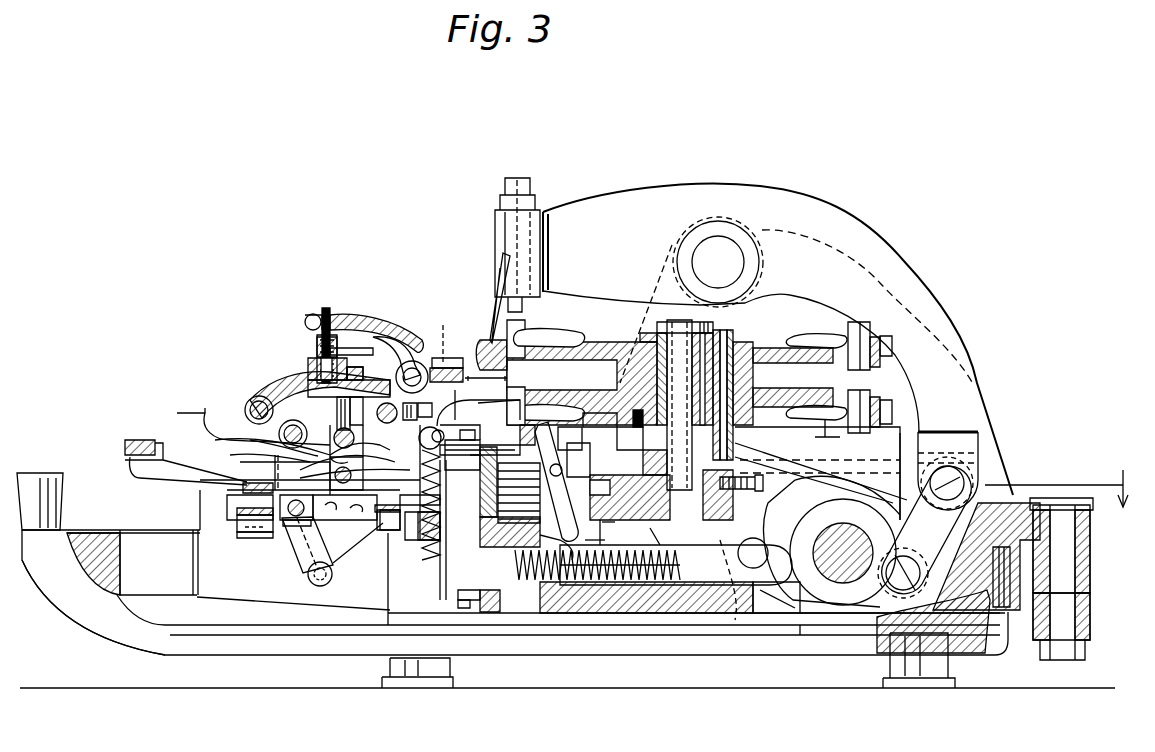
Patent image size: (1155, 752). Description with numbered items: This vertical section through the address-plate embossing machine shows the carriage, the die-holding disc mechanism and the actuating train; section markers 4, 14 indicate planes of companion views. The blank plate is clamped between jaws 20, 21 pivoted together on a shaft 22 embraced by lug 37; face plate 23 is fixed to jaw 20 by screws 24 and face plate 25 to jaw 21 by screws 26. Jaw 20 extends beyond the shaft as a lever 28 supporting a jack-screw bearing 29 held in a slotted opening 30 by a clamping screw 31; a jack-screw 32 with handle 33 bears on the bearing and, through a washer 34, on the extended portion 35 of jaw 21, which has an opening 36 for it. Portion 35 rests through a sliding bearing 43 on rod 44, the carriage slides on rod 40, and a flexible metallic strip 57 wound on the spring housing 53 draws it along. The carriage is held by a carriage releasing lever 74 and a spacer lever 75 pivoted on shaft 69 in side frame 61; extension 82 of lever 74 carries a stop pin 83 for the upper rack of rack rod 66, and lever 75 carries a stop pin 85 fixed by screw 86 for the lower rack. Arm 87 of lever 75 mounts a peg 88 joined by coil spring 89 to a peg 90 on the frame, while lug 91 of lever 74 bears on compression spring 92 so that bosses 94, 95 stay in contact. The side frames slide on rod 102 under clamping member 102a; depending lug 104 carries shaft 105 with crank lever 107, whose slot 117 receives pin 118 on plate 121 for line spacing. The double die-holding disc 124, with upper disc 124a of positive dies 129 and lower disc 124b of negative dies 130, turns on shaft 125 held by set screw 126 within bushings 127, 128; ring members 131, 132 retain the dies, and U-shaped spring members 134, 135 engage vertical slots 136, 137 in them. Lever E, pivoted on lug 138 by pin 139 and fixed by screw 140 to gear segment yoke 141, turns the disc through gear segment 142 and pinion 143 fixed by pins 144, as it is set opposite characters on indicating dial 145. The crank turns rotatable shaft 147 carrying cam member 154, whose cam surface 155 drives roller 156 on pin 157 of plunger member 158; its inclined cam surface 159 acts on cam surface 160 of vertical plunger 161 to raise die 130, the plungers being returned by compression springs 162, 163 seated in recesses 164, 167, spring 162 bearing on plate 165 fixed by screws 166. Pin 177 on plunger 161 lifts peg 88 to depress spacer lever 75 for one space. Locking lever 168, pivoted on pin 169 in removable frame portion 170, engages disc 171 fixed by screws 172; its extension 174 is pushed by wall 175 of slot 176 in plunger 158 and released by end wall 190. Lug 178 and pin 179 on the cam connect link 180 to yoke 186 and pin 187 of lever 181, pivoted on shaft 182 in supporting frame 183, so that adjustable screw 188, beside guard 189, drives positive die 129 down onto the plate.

The machine frame part 4 is at (467, 428).
The section indication 14 is at (1134, 489).
The jaw 20 is at (440, 340).
The jaw member 21 is at (487, 426).
The shaft 22 is at (403, 337).
The face plate 23 is at (460, 358).
The screws 24 is at (445, 366).
The face plate 25 is at (486, 384).
The screws 26 is at (455, 405).
The lever 28 is at (375, 314).
The jack-screw bearing 29 is at (328, 312).
The slotted opening 30 is at (320, 315).
The clamping screw 31 is at (305, 320).
The jack-screw 32 is at (316, 342).
The handle 33 is at (351, 344).
The washer 34 is at (308, 365).
The extended portion 35 is at (345, 385).
The opening 36 is at (334, 411).
The lug 37 is at (410, 366).
The rod 40 is at (407, 409).
The sliding bearing 43 is at (265, 395).
The rod 44 is at (248, 404).
The housing member 53 is at (429, 433).
The flexible metallic strip 57 is at (426, 411).
The side frame 61 is at (346, 525).
The rack rod 66 is at (378, 410).
The shaft 69 is at (265, 442).
The carriage releasing lever 74 is at (205, 410).
The spacer lever 75 is at (178, 486).
The extension 82 is at (340, 428).
The stop pin 83 is at (352, 405).
The stop pin 85 is at (361, 449).
The screw 86 is at (355, 473).
The arm 87 is at (354, 463).
The peg 88 is at (447, 429).
The coil spring 89 is at (358, 549).
The peg 90 is at (460, 560).
The lug 91 is at (259, 469).
The spiral compression spring 92 is at (243, 488).
The boss 94 is at (294, 424).
The boss 95 is at (275, 446).
The rod 102 is at (236, 517).
The clamping member 102a is at (250, 537).
The depending lug 104 is at (320, 545).
The shaft 105 is at (328, 585).
The crank lever 107 is at (290, 540).
The slot 117 is at (290, 530).
The pin 118 is at (285, 522).
The plate 121 is at (230, 503).
The double die-holding disc 124 is at (615, 350).
The upper die-holding disc 124a is at (810, 366).
The lower die-holding disc 124b is at (826, 393).
The shaft 125 is at (715, 325).
The set screw 126 is at (755, 482).
The bushing 127 is at (722, 338).
The bushing 128 is at (690, 428).
The dies 129 is at (556, 327).
The dies 130 is at (525, 384).
The ring member 131 is at (520, 350).
The ring member 132 is at (516, 430).
The spring member 134 is at (558, 336).
The spring member 135 is at (832, 440).
The vertical slot 136 is at (892, 346).
The vertical slot 137 is at (870, 418).
The lug 138 is at (1090, 612).
The pin 139 is at (1082, 645).
The screw 140 is at (1000, 607).
The gear segment yoke 141 is at (985, 505).
The gear segment 142 is at (770, 440).
The pinion 143 is at (661, 485).
The pins 144 is at (732, 350).
The indicating dial 145 is at (100, 532).
The rotatable shaft 147 is at (845, 525).
The cam member 154 is at (810, 616).
The cam surface 155 is at (768, 515).
The roller 156 is at (776, 597).
The pin 157 is at (754, 553).
The plunger member 158 is at (676, 576).
The inclined cam surface 159 is at (554, 546).
The cam surface 160 is at (510, 497).
The vertical plunger member 161 is at (535, 493).
The coiled compression spring 162 is at (496, 606).
The coiled compression spring 163 is at (490, 470).
The recess 164 is at (606, 614).
The plate 165 is at (476, 600).
The screws 166 is at (462, 610).
The recess 167 is at (426, 518).
The locking lever 168 is at (556, 481).
The pin 169 is at (590, 458).
The removable portion 170 is at (571, 438).
The disc 171 is at (621, 414).
The screws 172 is at (640, 438).
The extension 174 is at (610, 536).
The wall 175 is at (602, 522).
The slot 176 is at (631, 532).
The pin 177 is at (480, 441).
The lug 178 is at (924, 572).
The pin 179 is at (925, 560).
The link 180 is at (930, 513).
The lever 181 is at (905, 263).
The shaft 182 is at (718, 262).
The supporting frame 183 is at (838, 240).
The yoke 186 is at (965, 447).
The pin 187 is at (965, 480).
The adjustable screw 188 is at (515, 178).
The guard 189 is at (498, 295).
The end wall 190 is at (578, 610).
The lever E is at (100, 632).